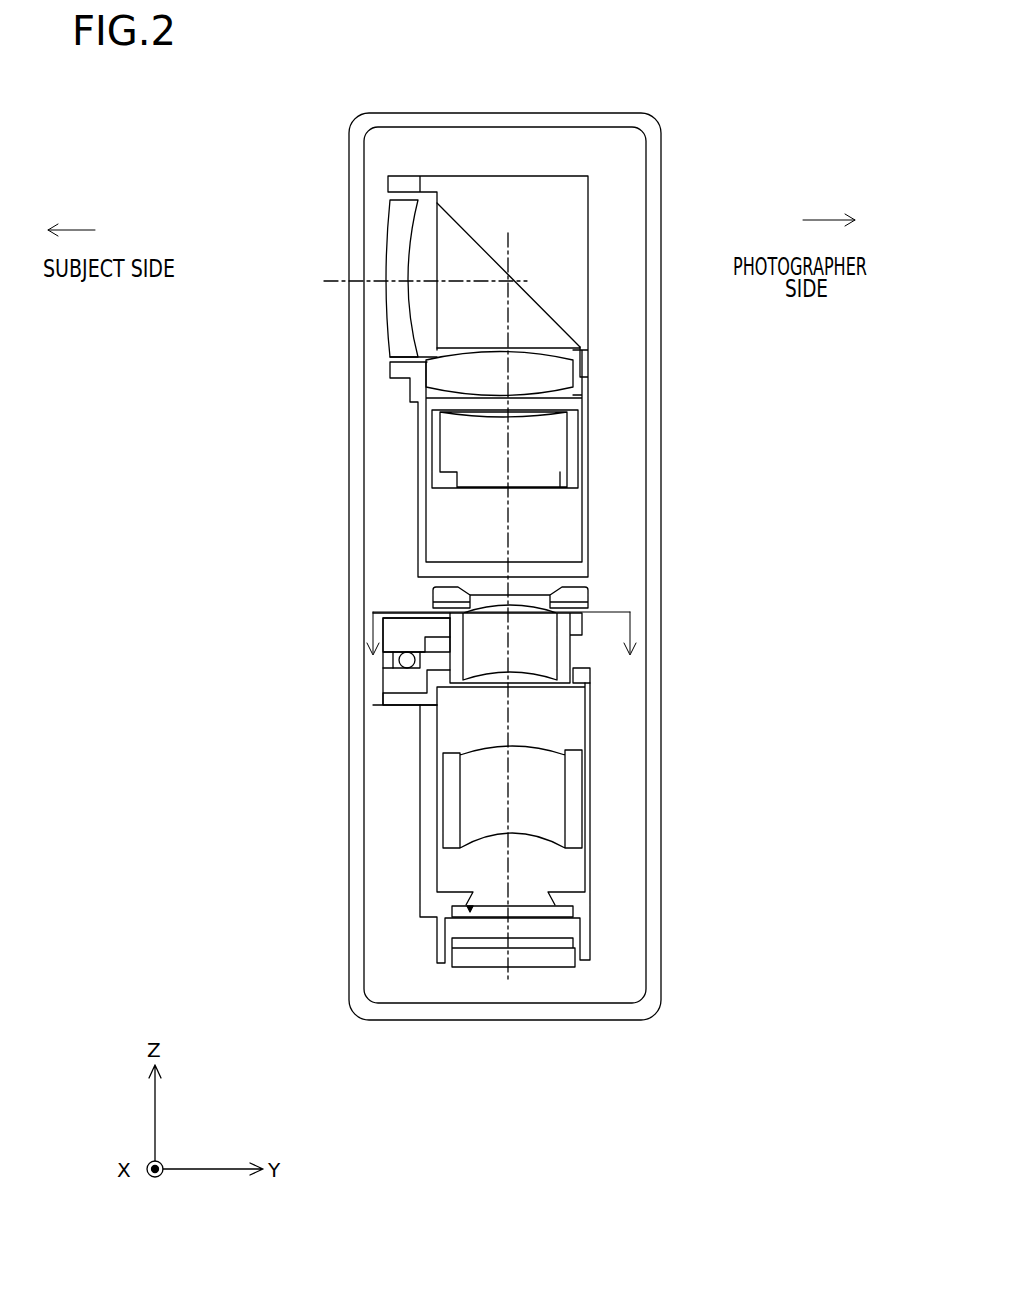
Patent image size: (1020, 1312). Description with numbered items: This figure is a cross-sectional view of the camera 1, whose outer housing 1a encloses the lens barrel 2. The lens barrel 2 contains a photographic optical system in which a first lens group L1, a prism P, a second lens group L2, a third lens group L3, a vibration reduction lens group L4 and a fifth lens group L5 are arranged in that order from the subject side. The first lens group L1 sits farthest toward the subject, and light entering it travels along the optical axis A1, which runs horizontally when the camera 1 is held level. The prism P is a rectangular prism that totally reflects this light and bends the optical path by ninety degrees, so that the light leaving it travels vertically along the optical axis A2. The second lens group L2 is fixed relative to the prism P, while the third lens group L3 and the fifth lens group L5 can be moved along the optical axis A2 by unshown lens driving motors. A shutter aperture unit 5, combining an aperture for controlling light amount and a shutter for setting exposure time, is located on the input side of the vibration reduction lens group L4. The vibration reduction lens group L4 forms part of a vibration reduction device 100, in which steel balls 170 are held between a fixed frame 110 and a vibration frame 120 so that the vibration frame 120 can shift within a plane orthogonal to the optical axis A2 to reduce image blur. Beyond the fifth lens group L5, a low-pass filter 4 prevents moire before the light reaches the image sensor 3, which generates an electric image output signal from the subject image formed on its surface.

The camera 1 is at (362, 93).
The housing 1a is at (349, 134).
The lens barrel 2 is at (561, 147).
The first lens group L1 is at (390, 243).
The second lens group L2 is at (457, 372).
The third lens group L3 is at (452, 447).
The vibration reduction lens group L4 is at (547, 650).
The fifth lens group L5 is at (557, 795).
The optical axis A1 is at (324, 281).
The optical axis A2 is at (508, 304).
The prism P is at (536, 325).
The shutter aperture unit 5 is at (587, 585).
The vibration reduction device 100 is at (326, 682).
The fixed frame 110 is at (392, 697).
The vibration frame 120 is at (387, 634).
The steel balls 170 is at (392, 656).
The low-pass filter 4 is at (537, 910).
The image sensor 3 is at (557, 955).